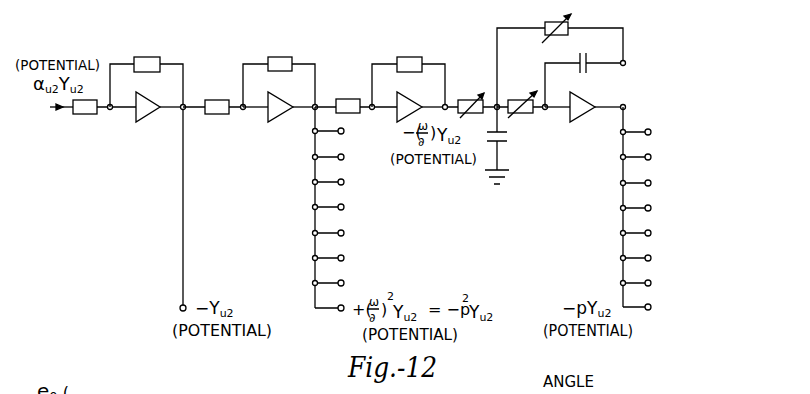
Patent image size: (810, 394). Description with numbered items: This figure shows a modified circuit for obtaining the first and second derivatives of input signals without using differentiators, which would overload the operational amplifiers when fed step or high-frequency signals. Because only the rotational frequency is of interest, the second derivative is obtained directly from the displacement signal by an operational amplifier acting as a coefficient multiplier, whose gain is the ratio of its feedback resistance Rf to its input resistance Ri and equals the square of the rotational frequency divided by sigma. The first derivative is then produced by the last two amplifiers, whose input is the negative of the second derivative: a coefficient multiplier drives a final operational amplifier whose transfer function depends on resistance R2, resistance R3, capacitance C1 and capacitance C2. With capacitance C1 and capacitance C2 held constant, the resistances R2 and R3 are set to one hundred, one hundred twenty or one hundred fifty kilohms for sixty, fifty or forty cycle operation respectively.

The input resistance Ri is at (340, 97).
The feedback resistance Rf is at (279, 71).
The resistance R2 is at (560, 54).
The resistance R3 is at (521, 99).
The capacitance C1 is at (505, 141).
The capacitance C2 is at (584, 76).